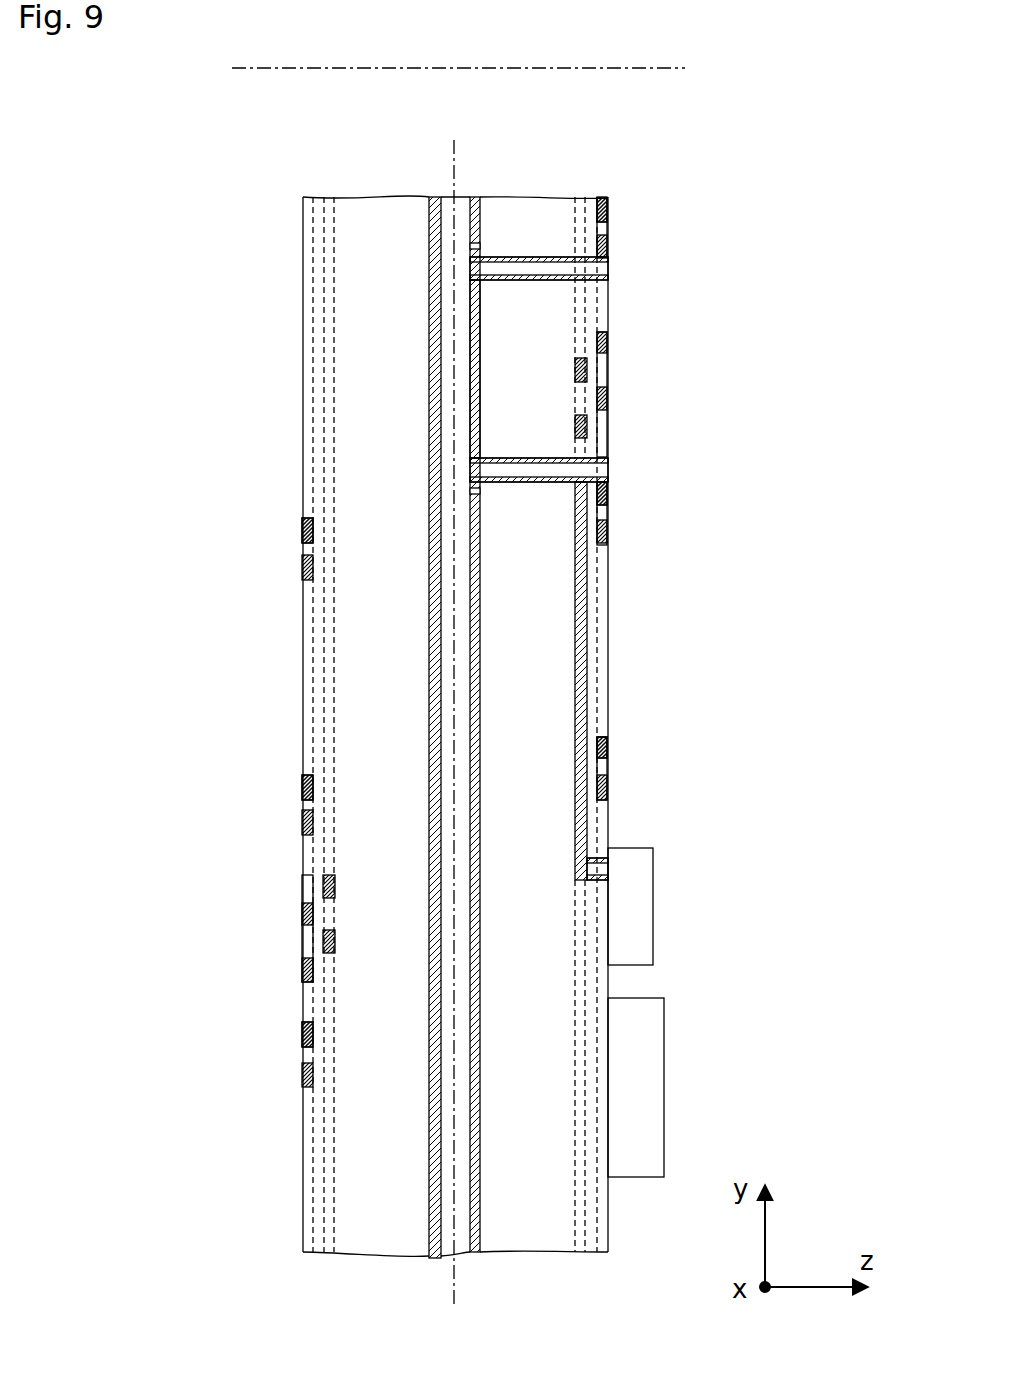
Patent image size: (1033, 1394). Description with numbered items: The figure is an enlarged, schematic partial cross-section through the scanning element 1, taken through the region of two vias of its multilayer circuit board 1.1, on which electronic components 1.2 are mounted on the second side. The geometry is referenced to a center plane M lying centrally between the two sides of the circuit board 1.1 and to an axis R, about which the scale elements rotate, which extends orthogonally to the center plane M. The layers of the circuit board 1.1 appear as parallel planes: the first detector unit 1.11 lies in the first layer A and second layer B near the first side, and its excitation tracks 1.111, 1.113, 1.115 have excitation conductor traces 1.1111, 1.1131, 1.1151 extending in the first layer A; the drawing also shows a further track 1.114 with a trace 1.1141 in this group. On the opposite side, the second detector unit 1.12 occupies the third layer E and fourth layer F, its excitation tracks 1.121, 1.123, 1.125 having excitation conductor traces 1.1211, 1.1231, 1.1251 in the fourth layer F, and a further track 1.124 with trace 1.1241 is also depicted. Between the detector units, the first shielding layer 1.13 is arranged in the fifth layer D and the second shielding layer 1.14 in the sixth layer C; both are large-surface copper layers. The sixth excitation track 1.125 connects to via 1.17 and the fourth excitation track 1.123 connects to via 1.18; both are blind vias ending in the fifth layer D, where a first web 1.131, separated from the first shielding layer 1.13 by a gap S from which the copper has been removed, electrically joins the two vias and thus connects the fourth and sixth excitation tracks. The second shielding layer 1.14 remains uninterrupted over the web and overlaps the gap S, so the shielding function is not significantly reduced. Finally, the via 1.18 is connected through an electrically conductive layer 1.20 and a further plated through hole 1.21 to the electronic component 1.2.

The scanning element 1 is at (262, 404).
The circuit board 1.1 is at (372, 210).
The first detector unit 1.11 is at (218, 528).
The excitation track 1.111 is at (299, 518).
The excitation conductor trace 1.1111 is at (313, 530).
The excitation track 1.113 is at (299, 775).
The excitation conductor trace 1.1131 is at (313, 787).
The fourth magnet pair 1.114 is at (299, 875).
The magnet of fourth magnet pair 1.1141 is at (335, 945).
The excitation track 1.115 is at (299, 1022).
The excitation conductor trace 1.1151 is at (313, 1035).
The second detector unit 1.12 is at (705, 203).
The excitation track 1.121 is at (612, 737).
The excitation conductor trace 1.1211 is at (597, 748).
The fourth excitation track 1.123 is at (612, 482).
The excitation conductor trace 1.1231 is at (597, 490).
The magnet pair 1.124 is at (612, 332).
The magnet 1.1241 is at (575, 370).
The sixth excitation track 1.125 is at (612, 205).
The excitation conductor trace 1.1251 is at (597, 214).
The first shielding layer 1.13 is at (480, 1200).
The first web 1.131 is at (480, 404).
The second shielding layer 1.14 is at (429, 1200).
The via 1.17 is at (608, 278).
The via 1.18 is at (608, 476).
The electronic component 1.2 is at (636, 1012).
The electrically conductive layer 1.20 is at (575, 664).
The plated through hole 1.21 is at (590, 882).
The gap S is at (470, 246).
The center plane M is at (454, 1275).
The axis R is at (662, 72).
The first layer A is at (308, 195).
The second layer B is at (331, 195).
The sixth layer C is at (436, 195).
The fifth layer D is at (474, 195).
The third layer E is at (580, 195).
The fourth layer F is at (603, 195).